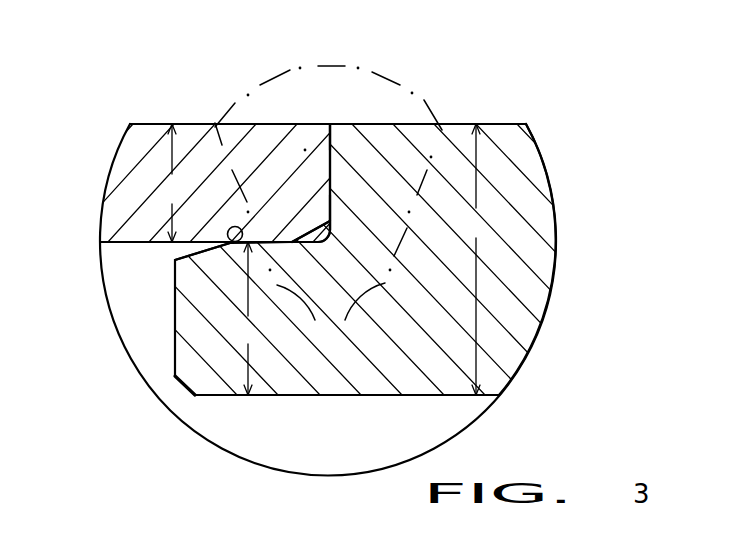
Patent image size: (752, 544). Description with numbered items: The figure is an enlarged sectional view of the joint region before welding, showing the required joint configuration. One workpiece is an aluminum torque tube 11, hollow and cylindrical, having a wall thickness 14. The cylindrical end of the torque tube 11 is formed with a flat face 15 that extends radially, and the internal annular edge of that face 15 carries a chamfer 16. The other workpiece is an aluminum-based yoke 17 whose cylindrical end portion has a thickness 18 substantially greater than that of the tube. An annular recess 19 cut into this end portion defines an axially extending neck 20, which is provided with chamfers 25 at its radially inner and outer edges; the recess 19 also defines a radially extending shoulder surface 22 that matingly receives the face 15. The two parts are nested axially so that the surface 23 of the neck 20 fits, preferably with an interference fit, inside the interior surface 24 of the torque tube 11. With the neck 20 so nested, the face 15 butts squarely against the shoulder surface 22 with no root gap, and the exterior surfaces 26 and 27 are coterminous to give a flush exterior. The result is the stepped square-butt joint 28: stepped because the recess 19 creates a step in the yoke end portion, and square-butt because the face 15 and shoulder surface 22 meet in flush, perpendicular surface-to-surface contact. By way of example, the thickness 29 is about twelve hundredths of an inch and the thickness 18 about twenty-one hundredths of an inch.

The torque tube 11 is at (130, 148).
The wall thickness 14 is at (172, 183).
The face 15 is at (332, 130).
The chamfer 16 is at (302, 236).
The yoke 17 is at (528, 168).
The thickness 18 is at (482, 259).
The annular recess 19 is at (328, 172).
The neck 20 is at (185, 360).
The shoulder surface 22 is at (331, 204).
The surface of the neck 23 is at (229, 243).
The interior surface 24 is at (122, 243).
The chamfers 25 is at (187, 252).
The exterior surface 26 is at (317, 123).
The exterior surface 27 is at (367, 123).
The stepped square-butt joint 28 is at (389, 60).
The thickness 29 is at (250, 318).